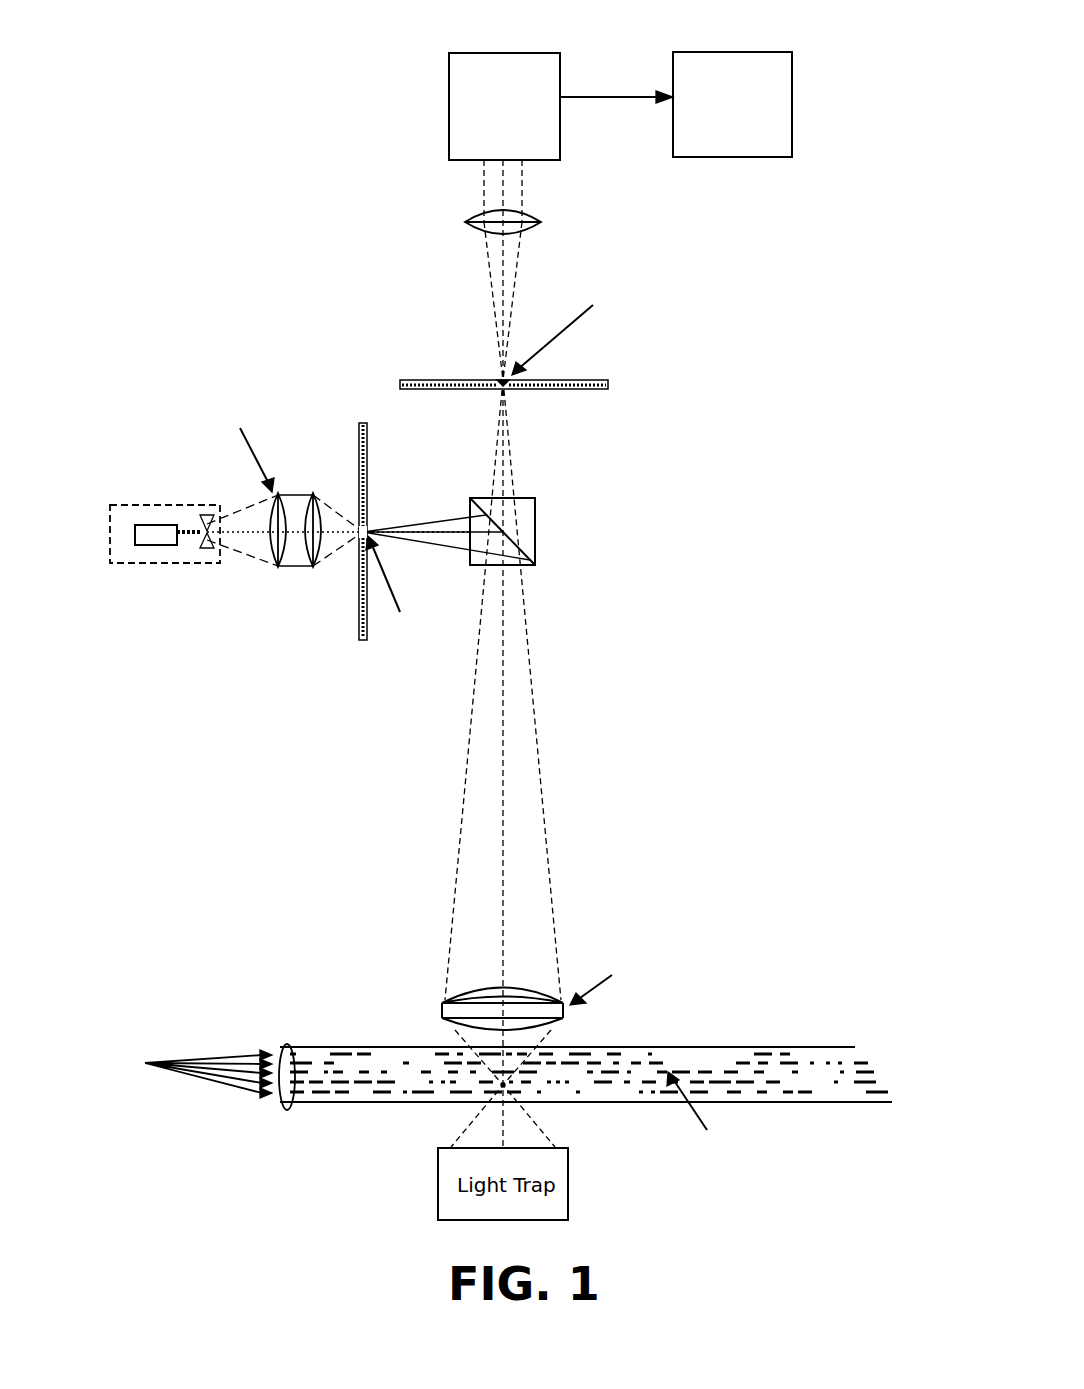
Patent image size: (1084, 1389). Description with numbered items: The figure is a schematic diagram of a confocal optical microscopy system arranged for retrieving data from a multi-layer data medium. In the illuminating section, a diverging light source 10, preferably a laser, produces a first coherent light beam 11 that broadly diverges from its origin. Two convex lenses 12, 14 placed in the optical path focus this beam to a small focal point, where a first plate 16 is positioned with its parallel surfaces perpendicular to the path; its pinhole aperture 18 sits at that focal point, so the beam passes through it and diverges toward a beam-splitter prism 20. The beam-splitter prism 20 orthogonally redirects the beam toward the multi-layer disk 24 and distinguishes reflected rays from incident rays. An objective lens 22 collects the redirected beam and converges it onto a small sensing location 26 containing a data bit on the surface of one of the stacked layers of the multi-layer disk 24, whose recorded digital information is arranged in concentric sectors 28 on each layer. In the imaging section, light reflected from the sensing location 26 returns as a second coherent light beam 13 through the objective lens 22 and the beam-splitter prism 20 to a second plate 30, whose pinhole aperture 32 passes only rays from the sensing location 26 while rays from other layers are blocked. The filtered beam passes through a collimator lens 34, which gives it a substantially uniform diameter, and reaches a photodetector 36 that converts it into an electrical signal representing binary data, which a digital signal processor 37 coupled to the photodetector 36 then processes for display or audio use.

The light source 10 is at (140, 505).
The first coherent light beam 11 is at (297, 493).
The convex lens 12 is at (280, 567).
The second coherent light beam 13 is at (490, 290).
The convex lens 14 is at (313, 567).
The first plate 16 is at (363, 640).
The pinhole aperture 18 is at (368, 530).
The beam-splitter prism 20 is at (535, 562).
The objective lens 22 is at (565, 1000).
The multi-layer disk 24 is at (800, 1047).
The sensing location 26 is at (495, 1090).
The concentric sectors 28 is at (290, 1110).
The second plate 30 is at (608, 383).
The pinhole aperture 32 is at (497, 377).
The collimator lens 34 is at (540, 215).
The photodetector 36 is at (449, 108).
The digital signal processor 37 is at (700, 52).